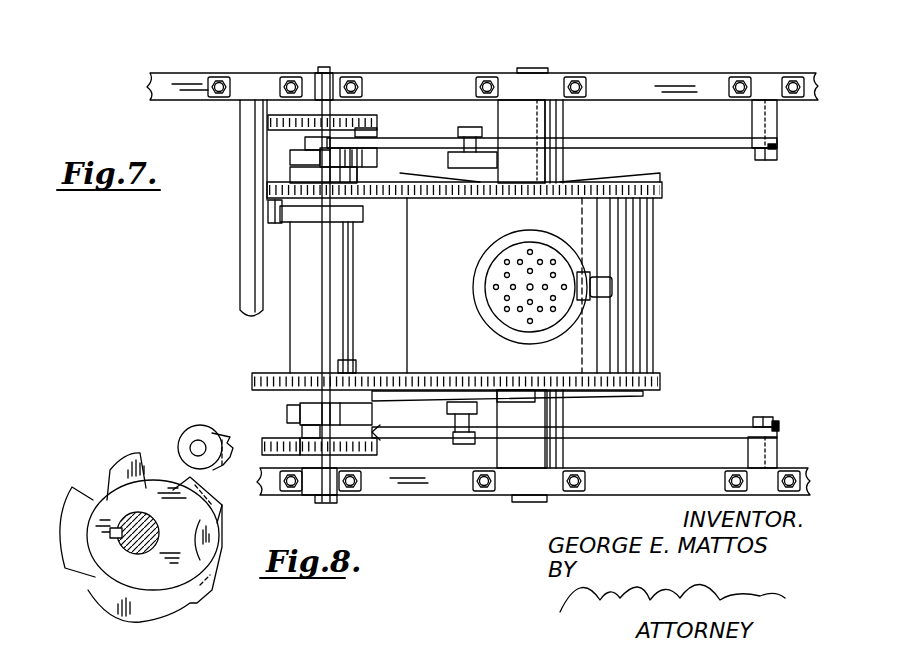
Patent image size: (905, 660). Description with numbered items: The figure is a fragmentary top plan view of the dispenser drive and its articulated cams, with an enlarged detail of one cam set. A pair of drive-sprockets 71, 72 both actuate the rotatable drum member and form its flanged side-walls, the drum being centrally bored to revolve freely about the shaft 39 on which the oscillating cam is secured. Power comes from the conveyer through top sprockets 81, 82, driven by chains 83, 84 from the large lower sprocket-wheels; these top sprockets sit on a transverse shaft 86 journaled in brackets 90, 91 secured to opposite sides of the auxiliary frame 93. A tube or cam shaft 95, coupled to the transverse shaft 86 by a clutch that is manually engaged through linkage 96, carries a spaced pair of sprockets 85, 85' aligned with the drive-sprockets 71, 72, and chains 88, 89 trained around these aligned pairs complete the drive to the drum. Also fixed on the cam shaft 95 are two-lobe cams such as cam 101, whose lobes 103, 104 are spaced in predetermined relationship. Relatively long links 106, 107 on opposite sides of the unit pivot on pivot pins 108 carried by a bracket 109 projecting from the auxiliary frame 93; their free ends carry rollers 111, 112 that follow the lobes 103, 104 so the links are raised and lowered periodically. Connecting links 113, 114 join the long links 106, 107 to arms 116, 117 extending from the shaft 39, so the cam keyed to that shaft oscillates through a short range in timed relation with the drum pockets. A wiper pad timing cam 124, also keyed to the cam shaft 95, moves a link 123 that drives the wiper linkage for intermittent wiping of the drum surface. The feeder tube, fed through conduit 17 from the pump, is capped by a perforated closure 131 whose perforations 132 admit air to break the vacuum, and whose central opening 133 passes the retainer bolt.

In FIG. 7, the conduit 17 is at (613, 287).
In FIG. 7, the shaft 39 is at (537, 70).
In FIG. 7, the drive-sprocket 71 is at (650, 393).
In FIG. 7, the drive-sprocket 72 is at (660, 186).
In FIG. 7, the top sprocket 81 is at (378, 450).
In FIG. 7, the top sprocket 82 is at (380, 121).
In FIG. 7, the chain 83 is at (297, 442).
In FIG. 7, the chain 84 is at (377, 131).
In FIG. 7, the sprocket 85 is at (338, 212).
In FIG. 7, the sprocket 85' is at (368, 357).
In FIG. 7, the transverse shaft 86 is at (322, 68).
In FIG. 8, the transverse shaft 86 is at (133, 543).
In FIG. 7, the chain 88 is at (583, 182).
In FIG. 7, the chain 89 is at (297, 380).
In FIG. 7, the bracket 90 is at (310, 490).
In FIG. 7, the bracket 91 is at (332, 82).
In FIG. 7, the auxiliary frame 93 is at (665, 84).
In FIG. 7, the cam shaft 95 is at (353, 303).
In FIG. 7, the linkage 96 is at (240, 285).
In FIG. 8, the two-lobe cam 101 is at (84, 562).
In FIG. 8, the cam lobe 103 is at (216, 500).
In FIG. 8, the cam lobe 104 is at (205, 600).
In FIG. 7, the link 106 is at (700, 432).
In FIG. 8, the link 106 is at (220, 436).
In FIG. 7, the link 107 is at (718, 147).
In FIG. 7, the pivot pin 108 is at (765, 161).
In FIG. 7, the bracket 109 is at (777, 127).
In FIG. 7, the roller 111 is at (372, 417).
In FIG. 8, the roller 111 is at (190, 426).
In FIG. 7, the roller 112 is at (378, 160).
In FIG. 7, the connecting link 113 is at (460, 415).
In FIG. 7, the connecting link 114 is at (482, 149).
In FIG. 7, the arm 116 is at (520, 398).
In FIG. 7, the arm 117 is at (490, 168).
In FIG. 7, the link 123 is at (268, 208).
In FIG. 7, the wiper pad timing cam 124 is at (365, 222).
In FIG. 8, the wiper pad timing cam 124 is at (133, 456).
In FIG. 7, the perforated closure 131 is at (520, 324).
In FIG. 7, the perforations 132 is at (506, 312).
In FIG. 7, the central opening 133 is at (527, 287).